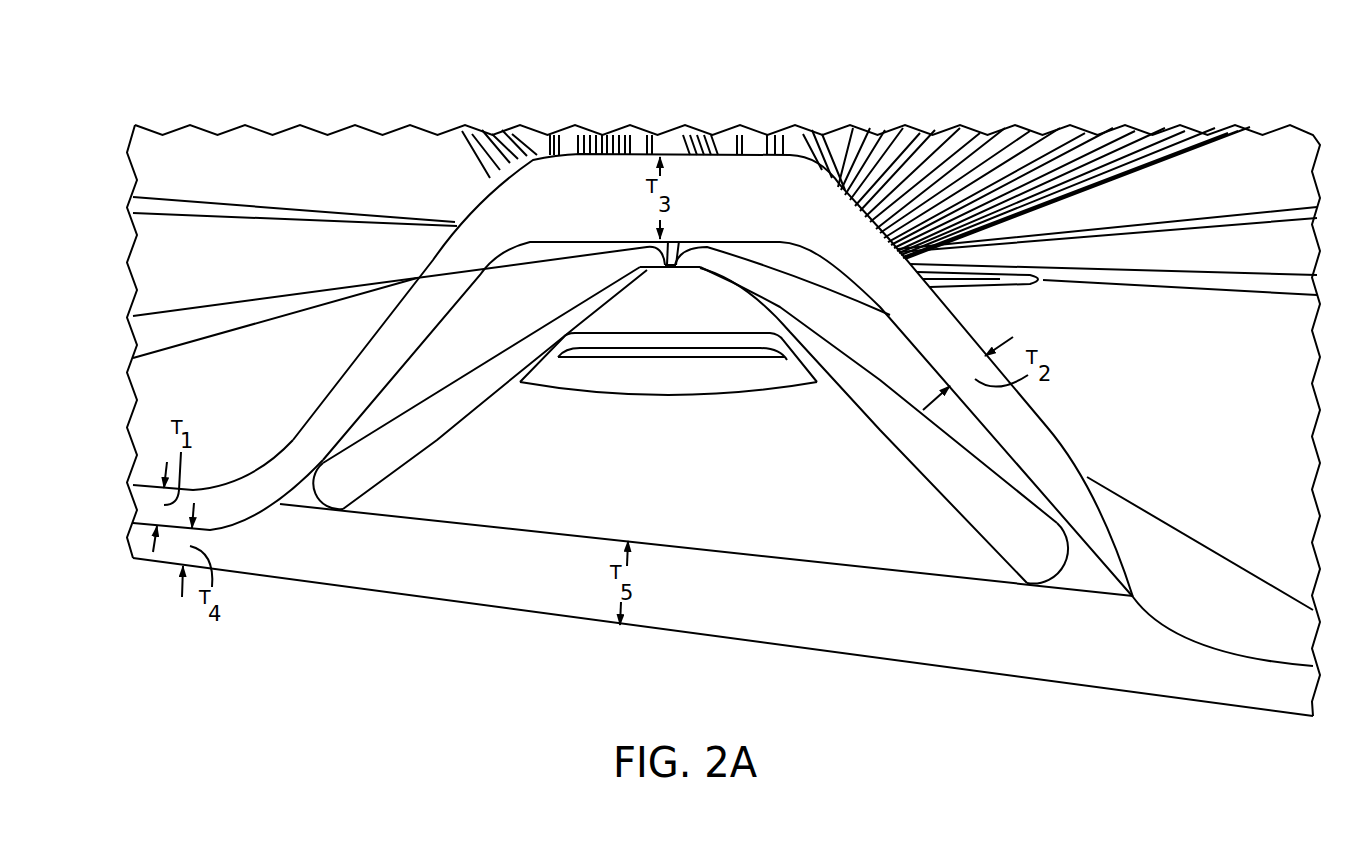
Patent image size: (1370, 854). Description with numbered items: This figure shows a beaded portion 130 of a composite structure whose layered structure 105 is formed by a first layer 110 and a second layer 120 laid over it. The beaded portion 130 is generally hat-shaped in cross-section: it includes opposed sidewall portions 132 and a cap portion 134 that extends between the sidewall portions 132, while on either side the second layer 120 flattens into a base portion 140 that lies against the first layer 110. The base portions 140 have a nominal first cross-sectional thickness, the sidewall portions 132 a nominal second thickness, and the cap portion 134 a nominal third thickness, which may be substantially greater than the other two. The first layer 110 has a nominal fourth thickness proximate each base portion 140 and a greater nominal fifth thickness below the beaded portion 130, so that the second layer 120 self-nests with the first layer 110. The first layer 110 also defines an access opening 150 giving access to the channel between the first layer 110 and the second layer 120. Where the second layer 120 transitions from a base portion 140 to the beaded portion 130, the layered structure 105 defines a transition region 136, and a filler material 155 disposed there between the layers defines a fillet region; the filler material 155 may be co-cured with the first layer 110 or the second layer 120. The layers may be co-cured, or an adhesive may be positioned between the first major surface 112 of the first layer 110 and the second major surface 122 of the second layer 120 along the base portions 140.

The layered structure 105 is at (1334, 677).
The first layer 110 is at (1102, 680).
The first major surface 112 is at (842, 558).
The second layer 120 is at (1175, 609).
The second major surface 122 is at (413, 395).
The beaded portion 130 is at (483, 180).
The sidewall portion 132 is at (1047, 430).
The cap portion 134 is at (770, 150).
The transition region 136 is at (1052, 635).
The base portion 140 is at (140, 497).
The access opening 150 is at (697, 384).
The filler material 155 is at (272, 537).